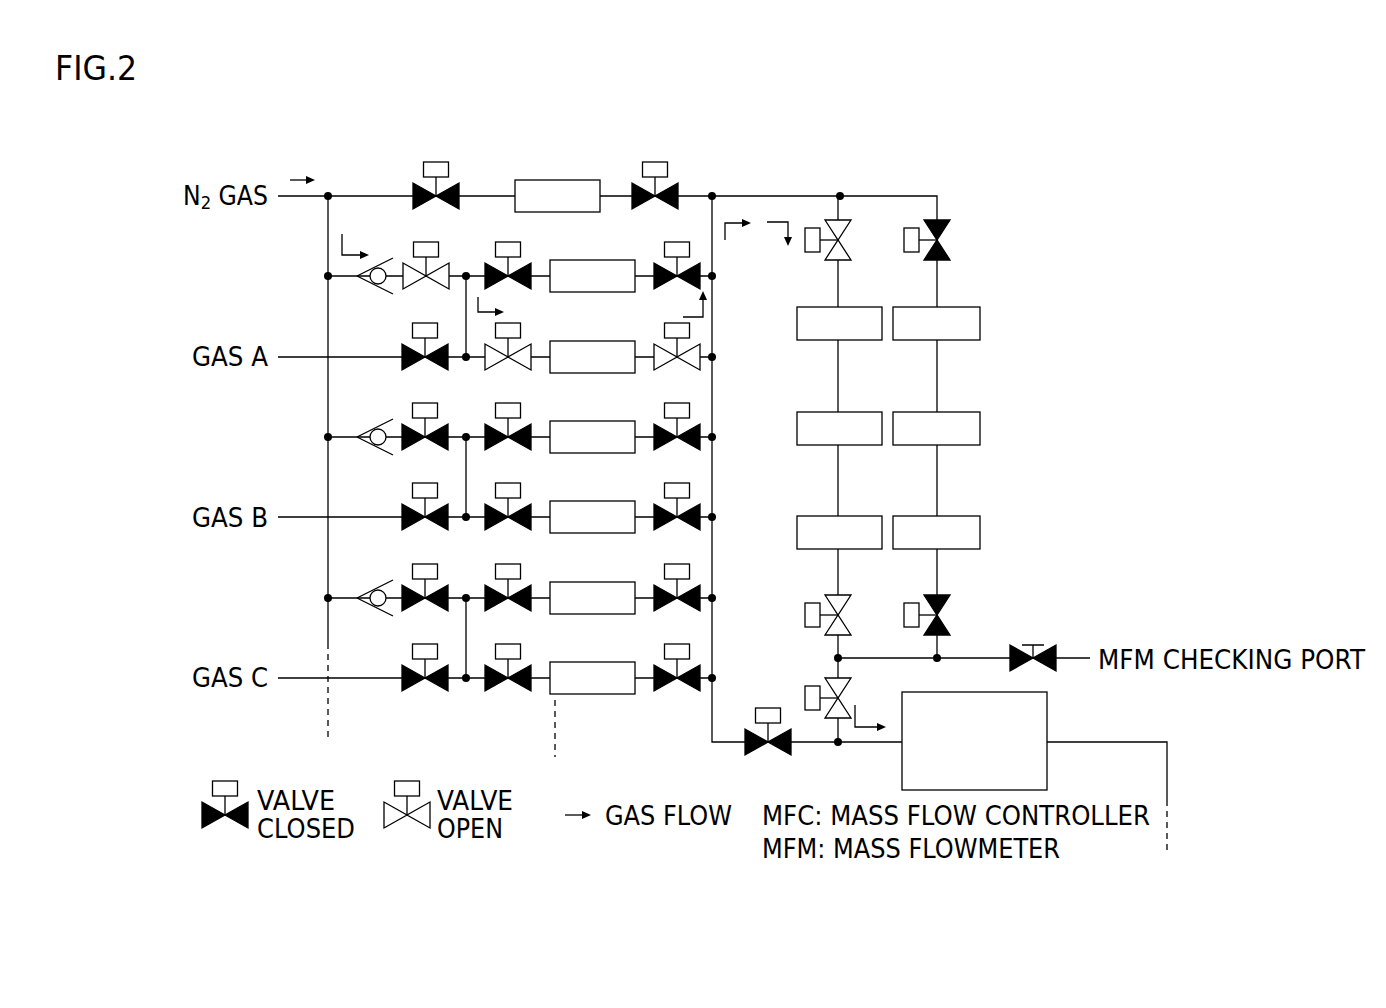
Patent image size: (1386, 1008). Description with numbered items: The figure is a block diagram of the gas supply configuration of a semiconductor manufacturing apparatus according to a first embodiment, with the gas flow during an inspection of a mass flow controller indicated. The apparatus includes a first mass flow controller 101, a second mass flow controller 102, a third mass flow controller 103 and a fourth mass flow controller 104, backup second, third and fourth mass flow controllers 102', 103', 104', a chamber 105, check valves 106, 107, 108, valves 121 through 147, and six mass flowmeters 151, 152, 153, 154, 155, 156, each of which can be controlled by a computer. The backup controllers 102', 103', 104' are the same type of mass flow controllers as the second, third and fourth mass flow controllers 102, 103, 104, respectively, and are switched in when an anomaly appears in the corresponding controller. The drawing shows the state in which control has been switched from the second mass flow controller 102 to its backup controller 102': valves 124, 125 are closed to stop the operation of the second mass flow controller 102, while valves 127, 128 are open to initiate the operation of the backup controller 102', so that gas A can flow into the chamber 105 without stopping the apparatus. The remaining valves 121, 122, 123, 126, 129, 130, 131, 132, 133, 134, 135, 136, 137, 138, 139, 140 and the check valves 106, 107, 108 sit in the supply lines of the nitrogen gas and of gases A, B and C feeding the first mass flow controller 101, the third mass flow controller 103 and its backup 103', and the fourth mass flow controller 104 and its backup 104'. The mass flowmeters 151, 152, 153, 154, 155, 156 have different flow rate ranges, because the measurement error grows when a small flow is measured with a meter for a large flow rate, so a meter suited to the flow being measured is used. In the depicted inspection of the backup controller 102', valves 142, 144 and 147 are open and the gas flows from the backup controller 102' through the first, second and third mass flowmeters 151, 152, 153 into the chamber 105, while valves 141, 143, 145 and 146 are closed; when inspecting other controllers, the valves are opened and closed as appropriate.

The mass flow controller MFC 1 101 is at (568, 179).
The mass flow controller MFC 2 102 is at (592, 263).
The mass flow controller MFC 2' 102' is at (594, 344).
The mass flow controller MFC 3 103 is at (592, 424).
The mass flow controller MFC 3' 103' is at (594, 504).
The mass flow controller MFC 4 104 is at (592, 585).
The mass flow controller MFC 4' 104' is at (594, 665).
The chamber 105 is at (1049, 705).
The check valve 106 is at (363, 281).
The check valve 107 is at (363, 442).
The check valve 108 is at (363, 603).
The valve 121 is at (436, 161).
The valve 122 is at (653, 161).
The valve 123 is at (433, 242).
The valve 124 is at (511, 242).
The valve 125 is at (679, 242).
The valve 126 is at (419, 323).
The valve 127 is at (509, 323).
The valve 128 is at (678, 323).
The valve 129 is at (426, 403).
The valve 130 is at (509, 403).
The valve 131 is at (678, 403).
The valve 132 is at (426, 483).
The valve 133 is at (509, 483).
The valve 134 is at (678, 483).
The valve 135 is at (426, 564).
The valve 136 is at (509, 564).
The valve 137 is at (678, 564).
The valve 138 is at (426, 644).
The valve 139 is at (509, 644).
The valve 140 is at (678, 644).
The valve 141 is at (766, 708).
The valve 142 is at (813, 253).
The valve 143 is at (951, 232).
The valve 144 is at (804, 615).
The valve 145 is at (951, 610).
The valve 146 is at (1046, 645).
The valve 147 is at (852, 700).
The mass flowmeter MFM 1 151 is at (796, 323).
The mass flowmeter MFM 2 152 is at (796, 428).
The mass flowmeter MFM 3 153 is at (796, 532).
The mass flowmeter MFM 4 154 is at (981, 323).
The mass flowmeter MFM 5 155 is at (981, 428).
The mass flowmeter MFM 6 156 is at (981, 532).